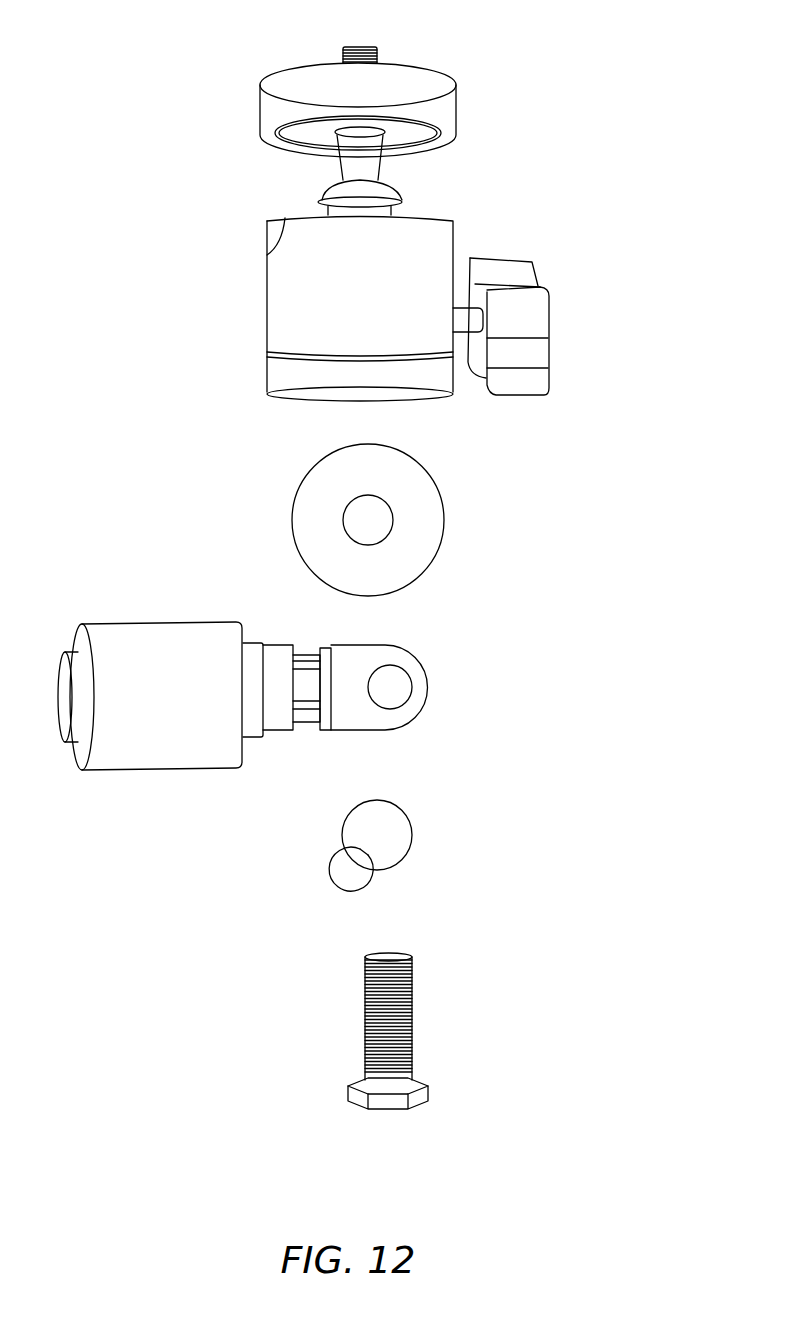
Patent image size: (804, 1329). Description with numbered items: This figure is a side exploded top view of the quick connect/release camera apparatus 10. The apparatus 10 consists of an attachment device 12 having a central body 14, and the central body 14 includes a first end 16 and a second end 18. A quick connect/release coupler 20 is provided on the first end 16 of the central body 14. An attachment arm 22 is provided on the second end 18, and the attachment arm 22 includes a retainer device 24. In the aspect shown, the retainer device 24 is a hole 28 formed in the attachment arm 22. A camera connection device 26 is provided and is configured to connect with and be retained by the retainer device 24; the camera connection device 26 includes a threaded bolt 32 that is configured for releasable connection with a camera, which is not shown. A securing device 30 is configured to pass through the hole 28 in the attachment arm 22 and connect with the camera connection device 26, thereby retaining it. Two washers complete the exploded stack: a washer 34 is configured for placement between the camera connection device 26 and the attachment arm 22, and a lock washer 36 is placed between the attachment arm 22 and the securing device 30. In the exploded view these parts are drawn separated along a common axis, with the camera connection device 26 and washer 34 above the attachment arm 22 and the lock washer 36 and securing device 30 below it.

The quick connect/release camera apparatus 10 is at (582, 620).
The attachment device 12 is at (250, 777).
The central body 14 is at (282, 645).
The first end 16 is at (150, 685).
The second end 18 is at (410, 696).
The quick connect/release coupler 20 is at (112, 755).
The attachment arm 22 is at (343, 731).
The retainer device 24 is at (412, 730).
The camera connection device 26 is at (440, 224).
The hole 28 is at (395, 690).
The securing device 30 is at (412, 995).
The threaded bolt 32 is at (382, 53).
The washer 34 is at (442, 498).
The lock washer 36 is at (412, 840).